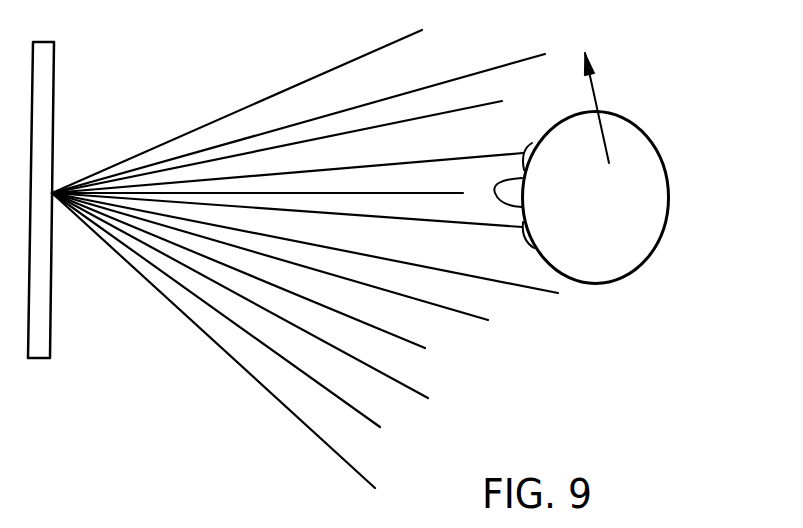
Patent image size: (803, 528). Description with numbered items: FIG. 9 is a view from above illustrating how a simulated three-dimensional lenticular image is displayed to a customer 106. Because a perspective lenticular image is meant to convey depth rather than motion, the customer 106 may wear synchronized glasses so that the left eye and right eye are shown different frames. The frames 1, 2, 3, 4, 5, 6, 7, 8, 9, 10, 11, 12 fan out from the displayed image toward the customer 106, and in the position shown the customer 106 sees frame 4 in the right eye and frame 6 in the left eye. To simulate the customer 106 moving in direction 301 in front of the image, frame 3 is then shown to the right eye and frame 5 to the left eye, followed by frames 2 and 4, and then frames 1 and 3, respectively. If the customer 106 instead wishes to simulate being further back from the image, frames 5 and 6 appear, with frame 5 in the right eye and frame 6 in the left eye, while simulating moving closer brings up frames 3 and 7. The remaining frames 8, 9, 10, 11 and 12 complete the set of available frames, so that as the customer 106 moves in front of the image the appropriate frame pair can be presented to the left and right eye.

The frame 1 is at (237, 103).
The frame 2 is at (298, 114).
The frame 3 is at (277, 134).
The frame 4 is at (287, 157).
The frame 5 is at (257, 176).
The frame 6 is at (287, 210).
The frame 7 is at (305, 243).
The frame 8 is at (271, 256).
The frame 9 is at (245, 270).
The frame 10 is at (249, 295).
The frame 11 is at (226, 310).
The frame 12 is at (227, 340).
The customer 106 is at (655, 203).
The direction 301 is at (600, 93).